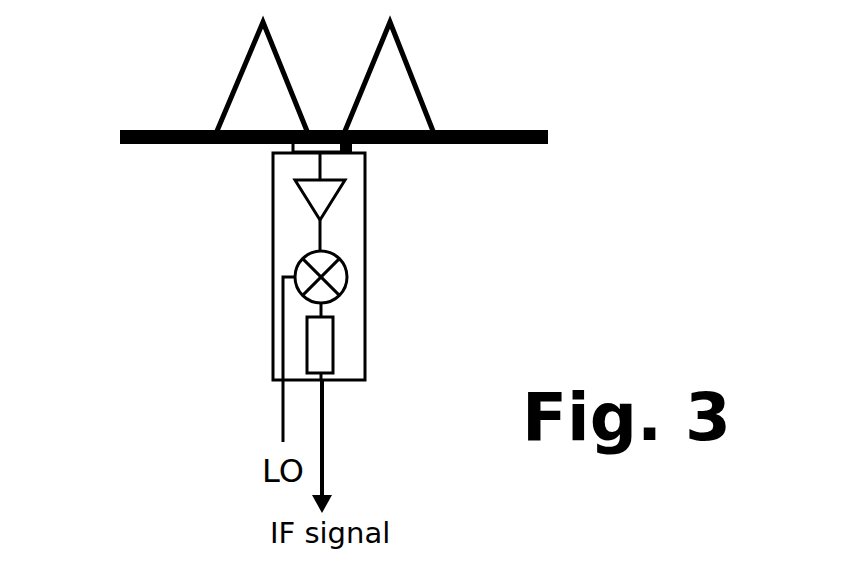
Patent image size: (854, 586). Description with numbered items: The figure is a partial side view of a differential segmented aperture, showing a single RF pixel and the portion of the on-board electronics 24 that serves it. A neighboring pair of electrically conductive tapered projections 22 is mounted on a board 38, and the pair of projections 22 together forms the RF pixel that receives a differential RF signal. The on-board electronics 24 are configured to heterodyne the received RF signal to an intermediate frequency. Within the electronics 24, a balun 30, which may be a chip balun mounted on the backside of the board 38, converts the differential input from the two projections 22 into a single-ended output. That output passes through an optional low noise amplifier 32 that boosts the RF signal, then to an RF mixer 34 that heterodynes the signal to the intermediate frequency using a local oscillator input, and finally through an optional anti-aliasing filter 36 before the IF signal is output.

The electrically conductive tapered projections 22 is at (290, 82).
The on-board electronics 24 is at (272, 205).
The balun 30 is at (369, 155).
The low noise amplifier 32 is at (355, 205).
The RF mixer 34 is at (365, 263).
The anti-aliasing filter 36 is at (356, 341).
The board 38 is at (153, 134).